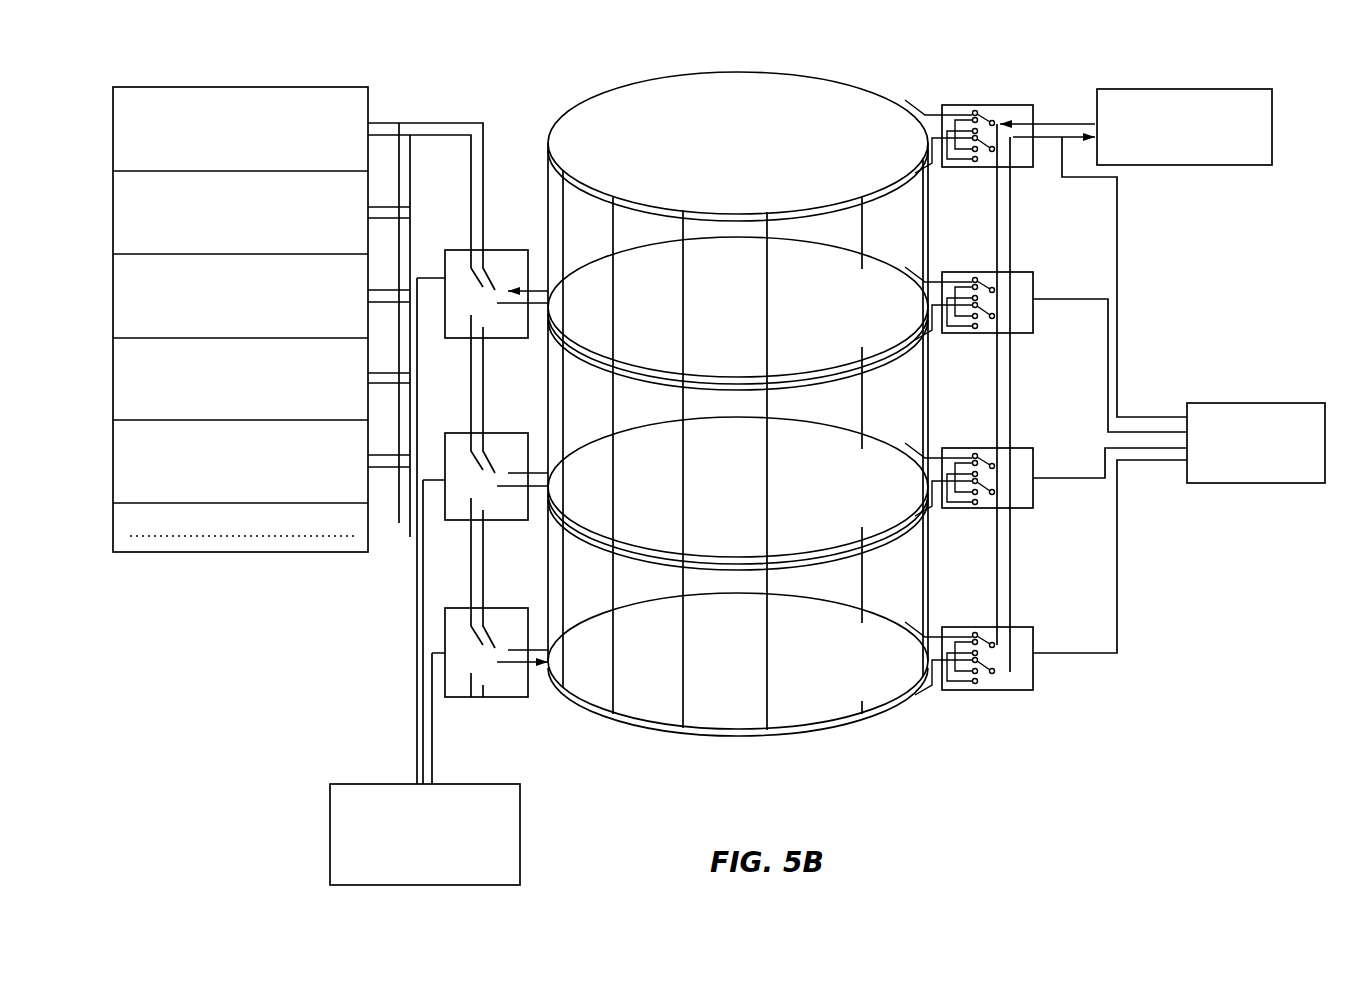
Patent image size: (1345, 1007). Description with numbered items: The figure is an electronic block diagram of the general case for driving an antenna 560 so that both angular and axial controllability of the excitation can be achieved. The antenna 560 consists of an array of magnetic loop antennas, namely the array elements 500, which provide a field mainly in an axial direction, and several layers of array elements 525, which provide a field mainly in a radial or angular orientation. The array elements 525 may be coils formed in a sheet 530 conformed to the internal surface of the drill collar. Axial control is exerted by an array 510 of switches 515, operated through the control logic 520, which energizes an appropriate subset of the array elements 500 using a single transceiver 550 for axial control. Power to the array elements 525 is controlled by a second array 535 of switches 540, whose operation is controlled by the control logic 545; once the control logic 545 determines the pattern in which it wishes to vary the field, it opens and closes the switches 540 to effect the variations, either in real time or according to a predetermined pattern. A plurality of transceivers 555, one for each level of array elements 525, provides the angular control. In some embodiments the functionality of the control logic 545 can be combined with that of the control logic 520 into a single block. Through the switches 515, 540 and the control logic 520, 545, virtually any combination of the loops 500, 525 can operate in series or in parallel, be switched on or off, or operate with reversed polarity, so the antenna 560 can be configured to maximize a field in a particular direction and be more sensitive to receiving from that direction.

The array elements 500 is at (600, 93).
The array of switches 510 is at (1037, 385).
The switches 515 is at (1012, 167).
The control logic 520 is at (1258, 403).
The array elements 525 is at (573, 198).
The sheet 530 is at (623, 218).
The second array of switches 535 is at (487, 705).
The switches 540 is at (463, 262).
The control logic 545 is at (397, 784).
The transceiver 550 is at (1198, 89).
The transceivers 555 is at (113, 125).
The antenna 560 is at (780, 396).